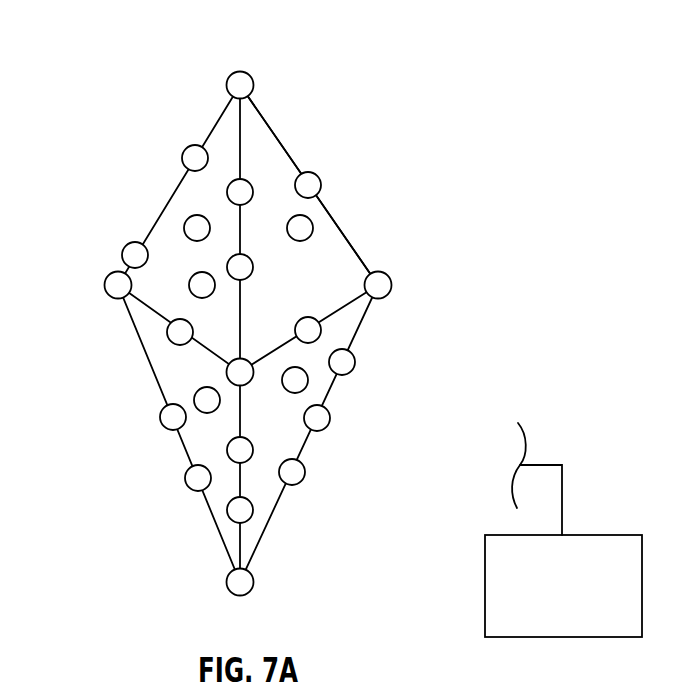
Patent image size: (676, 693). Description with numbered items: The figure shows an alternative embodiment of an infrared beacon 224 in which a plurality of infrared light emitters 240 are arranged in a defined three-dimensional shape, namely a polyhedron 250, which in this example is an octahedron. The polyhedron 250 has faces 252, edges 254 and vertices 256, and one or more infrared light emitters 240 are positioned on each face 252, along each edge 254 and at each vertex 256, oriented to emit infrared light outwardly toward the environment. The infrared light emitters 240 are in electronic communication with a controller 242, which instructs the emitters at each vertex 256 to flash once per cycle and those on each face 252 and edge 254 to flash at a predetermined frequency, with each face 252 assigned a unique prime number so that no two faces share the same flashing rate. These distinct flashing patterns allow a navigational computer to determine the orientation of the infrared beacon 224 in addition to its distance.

The infrared beacon 224 is at (406, 188).
The infrared light emitter 240 is at (240, 71).
The controller 242 is at (583, 612).
The polyhedron 250 is at (334, 253).
The face 252 is at (185, 298).
The edge 254 is at (276, 136).
The vertex 256 is at (124, 297).